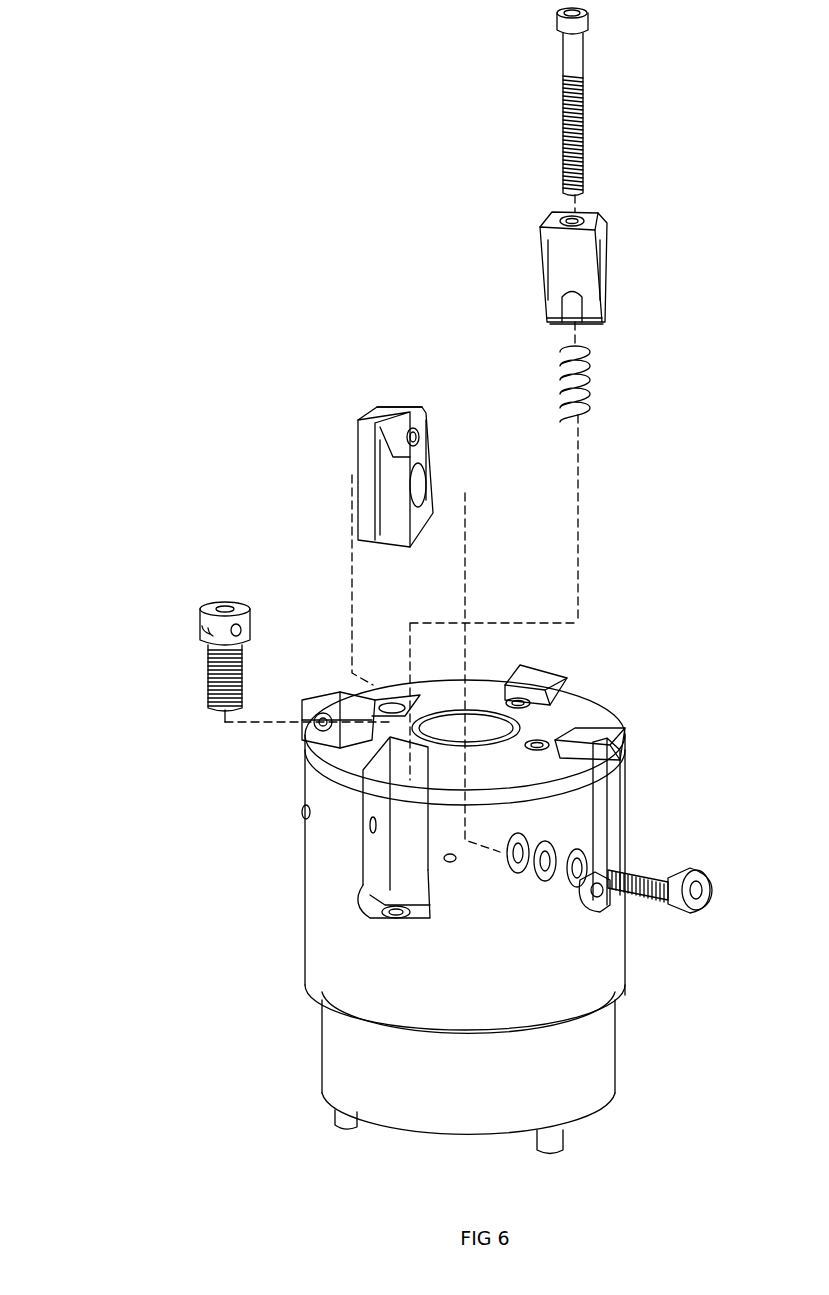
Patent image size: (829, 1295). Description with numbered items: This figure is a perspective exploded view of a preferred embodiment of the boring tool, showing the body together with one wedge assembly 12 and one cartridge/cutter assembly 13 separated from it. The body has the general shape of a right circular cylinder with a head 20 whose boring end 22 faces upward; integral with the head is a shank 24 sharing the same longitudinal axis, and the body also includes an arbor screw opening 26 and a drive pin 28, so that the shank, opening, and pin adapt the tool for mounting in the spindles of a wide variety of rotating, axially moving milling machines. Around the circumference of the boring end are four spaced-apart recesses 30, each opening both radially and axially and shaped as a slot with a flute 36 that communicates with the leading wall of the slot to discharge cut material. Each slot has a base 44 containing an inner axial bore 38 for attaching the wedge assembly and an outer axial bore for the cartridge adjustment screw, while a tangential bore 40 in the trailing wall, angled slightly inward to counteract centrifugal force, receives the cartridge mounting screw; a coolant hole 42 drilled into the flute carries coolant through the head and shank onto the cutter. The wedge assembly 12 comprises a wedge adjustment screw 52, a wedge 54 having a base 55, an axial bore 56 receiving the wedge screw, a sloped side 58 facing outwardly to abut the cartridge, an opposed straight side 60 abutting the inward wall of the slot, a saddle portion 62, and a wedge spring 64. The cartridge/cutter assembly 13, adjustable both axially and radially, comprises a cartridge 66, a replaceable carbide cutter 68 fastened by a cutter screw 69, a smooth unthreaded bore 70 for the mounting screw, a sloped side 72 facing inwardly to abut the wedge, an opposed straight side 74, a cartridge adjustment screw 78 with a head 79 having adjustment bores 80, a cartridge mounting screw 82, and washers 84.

The wedge assembly 12 is at (470, 212).
The cartridge/cutter assembly 13 is at (278, 377).
The head 20 is at (600, 975).
The boring end 22 is at (615, 718).
The shank 24 is at (612, 1108).
The arbor screw opening 26 is at (520, 712).
The drive pin 28 is at (348, 1125).
The recess 30 is at (366, 855).
The flute 36 is at (375, 940).
The inner axial bore 38 is at (370, 917).
The tangential bore 40 is at (370, 825).
The coolant hole 42 is at (450, 862).
The base 44 is at (405, 920).
The wedge adjustment screw 52 is at (575, 57).
The wedge 54 is at (597, 245).
The base 55 is at (597, 326).
The axial bore 56 is at (590, 213).
The sloped side 58 is at (555, 262).
The straight side 60 is at (606, 283).
The saddle portion 62 is at (565, 323).
The wedge spring 64 is at (590, 352).
The cartridge 66 is at (368, 450).
The cutter 68 is at (408, 408).
The cutter screw 69 is at (413, 440).
The smooth unthreaded bore 70 is at (415, 497).
The sloped side 72 is at (430, 462).
The straight side 74 is at (390, 530).
The cartridge adjustment screw 78 is at (200, 677).
The head 79 is at (205, 612).
The adjustment bores 80 is at (238, 631).
The cartridge mounting screw 82 is at (665, 900).
The washers 84 is at (585, 862).